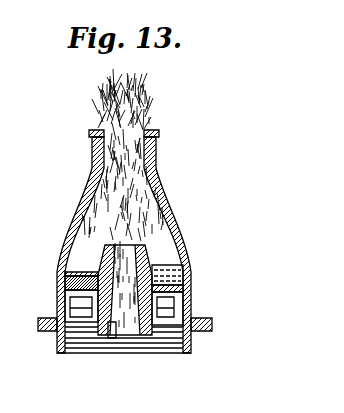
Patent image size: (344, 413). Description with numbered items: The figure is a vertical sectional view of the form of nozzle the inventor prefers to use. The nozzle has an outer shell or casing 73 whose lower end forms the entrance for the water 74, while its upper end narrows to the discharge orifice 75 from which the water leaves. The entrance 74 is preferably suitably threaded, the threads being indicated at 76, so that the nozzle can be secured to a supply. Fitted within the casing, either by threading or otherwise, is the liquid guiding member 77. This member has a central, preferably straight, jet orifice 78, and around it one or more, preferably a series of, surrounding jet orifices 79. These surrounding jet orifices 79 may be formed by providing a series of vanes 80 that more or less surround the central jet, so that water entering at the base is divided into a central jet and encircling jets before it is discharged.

The shell or casing 73 is at (92, 174).
The entrance for the water 74 is at (195, 339).
The discharge orifice 75 is at (157, 131).
The threads 76 is at (168, 345).
The liquid guiding member 77 is at (170, 281).
The central jet orifice 78 is at (113, 338).
The surrounding jet orifices 79 is at (68, 283).
The vanes 80 is at (76, 308).